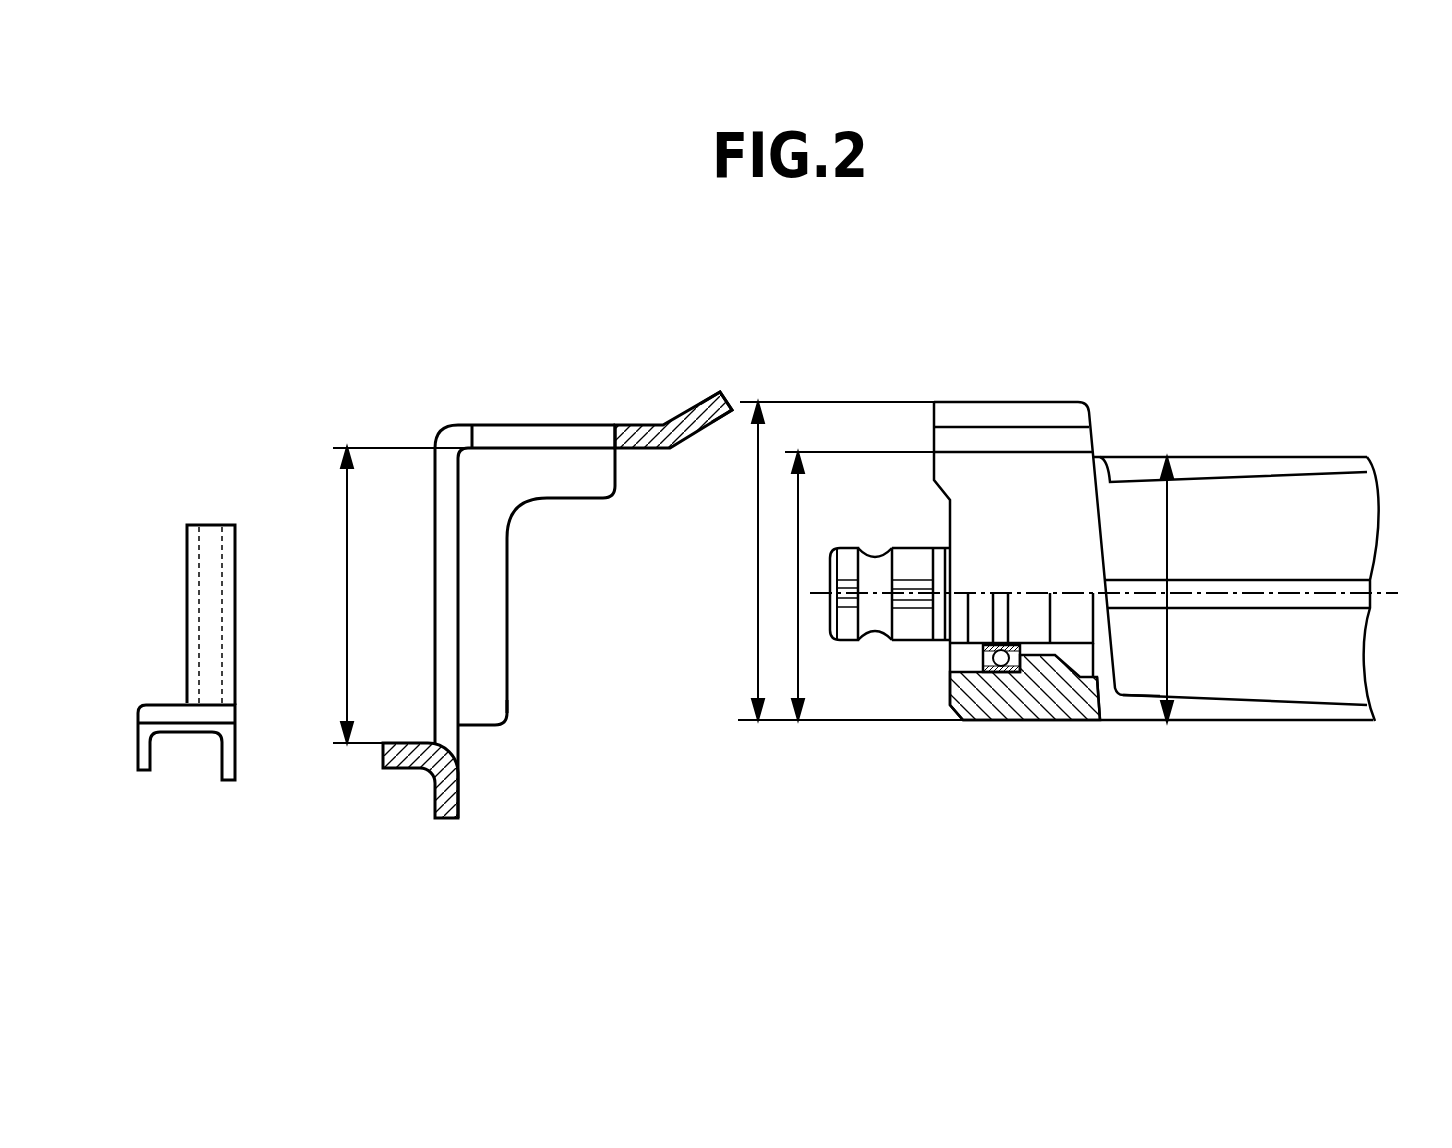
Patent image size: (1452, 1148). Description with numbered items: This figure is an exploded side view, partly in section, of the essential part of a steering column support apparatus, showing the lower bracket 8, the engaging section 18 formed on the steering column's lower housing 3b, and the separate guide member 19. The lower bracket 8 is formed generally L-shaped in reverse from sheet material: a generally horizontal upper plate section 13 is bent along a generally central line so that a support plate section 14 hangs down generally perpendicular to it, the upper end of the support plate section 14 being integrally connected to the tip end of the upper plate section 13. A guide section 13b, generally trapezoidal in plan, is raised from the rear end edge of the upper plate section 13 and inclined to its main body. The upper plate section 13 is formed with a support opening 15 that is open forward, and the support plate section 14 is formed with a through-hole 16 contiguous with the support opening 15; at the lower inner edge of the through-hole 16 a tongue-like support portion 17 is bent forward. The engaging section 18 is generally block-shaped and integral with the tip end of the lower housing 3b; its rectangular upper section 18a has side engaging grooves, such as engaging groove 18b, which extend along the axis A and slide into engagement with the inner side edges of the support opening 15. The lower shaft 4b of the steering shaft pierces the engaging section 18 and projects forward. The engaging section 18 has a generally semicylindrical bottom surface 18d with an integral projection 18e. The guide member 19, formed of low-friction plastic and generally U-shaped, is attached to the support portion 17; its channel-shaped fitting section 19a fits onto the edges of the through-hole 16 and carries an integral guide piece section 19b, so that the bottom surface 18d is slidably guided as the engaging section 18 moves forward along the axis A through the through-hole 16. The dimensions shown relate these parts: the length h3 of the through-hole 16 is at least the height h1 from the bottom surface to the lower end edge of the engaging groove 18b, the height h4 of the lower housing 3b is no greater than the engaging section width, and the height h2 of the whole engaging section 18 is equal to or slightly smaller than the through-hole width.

The lower bracket 8 is at (564, 605).
The upper plate section 13 is at (652, 440).
The guide section 13b is at (710, 392).
The support plate section 14 is at (458, 688).
The support opening 15 is at (540, 440).
The through-hole 16 is at (445, 638).
The support portion 17 is at (445, 818).
The engaging section 18 is at (1153, 564).
The upper section 18a is at (968, 400).
The engaging groove 18b is at (1043, 440).
The bottom surface 18d is at (1128, 722).
The projection 18e is at (1185, 722).
The guide member 19 is at (234, 591).
The fitting section 19a is at (237, 619).
The guide piece section 19b is at (160, 708).
The lower housing 3b is at (1302, 495).
The lower shaft 4b is at (908, 621).
The axis A is at (1327, 592).
The height h1 is at (798, 557).
The height h2 is at (750, 580).
The length h3 is at (347, 580).
The height h4 is at (1168, 565).